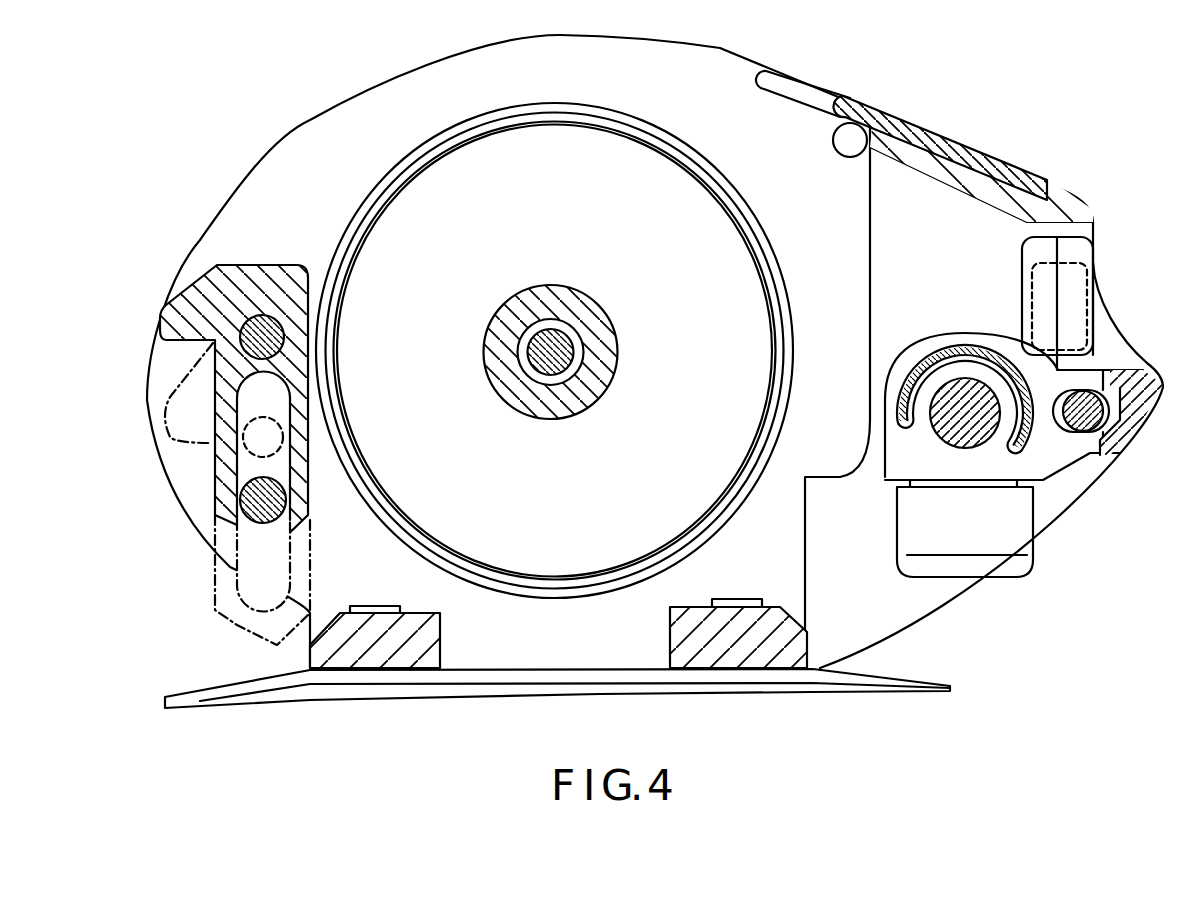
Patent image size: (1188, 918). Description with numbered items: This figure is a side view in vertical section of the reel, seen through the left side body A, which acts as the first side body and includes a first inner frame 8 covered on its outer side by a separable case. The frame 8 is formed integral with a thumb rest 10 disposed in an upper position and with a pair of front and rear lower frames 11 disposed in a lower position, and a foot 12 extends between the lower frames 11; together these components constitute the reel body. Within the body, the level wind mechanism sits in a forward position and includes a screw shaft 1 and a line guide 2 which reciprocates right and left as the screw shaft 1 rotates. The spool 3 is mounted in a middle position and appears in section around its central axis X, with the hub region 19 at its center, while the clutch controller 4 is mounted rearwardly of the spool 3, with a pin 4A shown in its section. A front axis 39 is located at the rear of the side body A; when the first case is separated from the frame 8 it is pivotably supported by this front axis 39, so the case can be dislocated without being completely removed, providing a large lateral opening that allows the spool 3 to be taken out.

The screw shaft 1 is at (963, 413).
The line guide 2 is at (917, 340).
The spool 3 is at (745, 268).
The clutch controller 4 is at (285, 268).
The pawl pin 4A is at (255, 318).
The first inner frame 8 is at (310, 132).
The thumb rest 10 is at (962, 140).
The lower frames 11 is at (430, 643).
The foot 12 is at (573, 690).
The spindle 19 is at (566, 343).
The front axis 39 is at (1082, 432).
The left side body A is at (243, 157).
The axis X is at (560, 365).